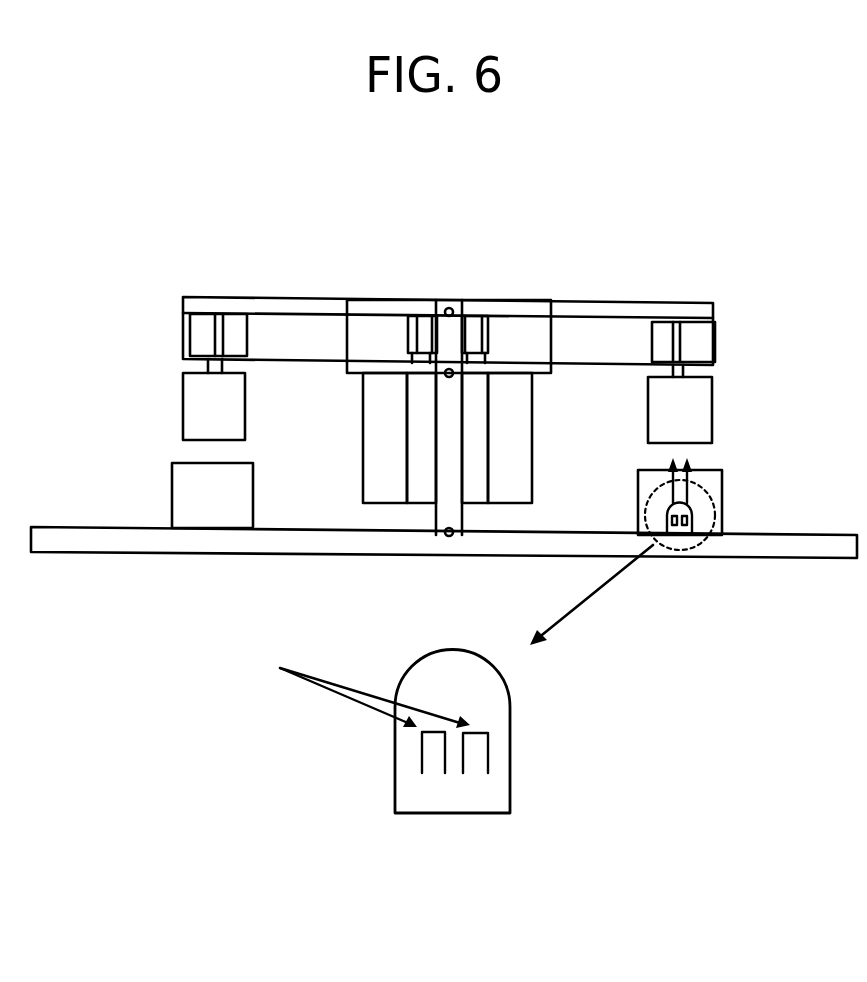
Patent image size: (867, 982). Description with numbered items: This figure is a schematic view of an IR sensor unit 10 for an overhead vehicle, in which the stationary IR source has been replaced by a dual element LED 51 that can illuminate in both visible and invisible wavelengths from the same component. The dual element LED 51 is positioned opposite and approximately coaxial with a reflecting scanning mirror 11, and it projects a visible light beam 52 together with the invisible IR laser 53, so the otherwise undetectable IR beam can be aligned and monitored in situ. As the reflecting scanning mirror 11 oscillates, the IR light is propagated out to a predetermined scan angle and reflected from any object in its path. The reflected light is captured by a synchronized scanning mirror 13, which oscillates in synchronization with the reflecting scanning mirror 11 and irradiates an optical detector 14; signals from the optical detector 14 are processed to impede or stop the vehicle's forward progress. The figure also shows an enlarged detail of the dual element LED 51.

The IR sensor unit 10 is at (133, 230).
The reflecting scanning mirror 11 is at (712, 413).
The synchronized scanning mirror 13 is at (183, 405).
The optical detector 14 is at (172, 493).
The dual element LED 51 is at (707, 542).
The visible light beam 52 is at (692, 466).
The invisible IR laser 53 is at (668, 466).